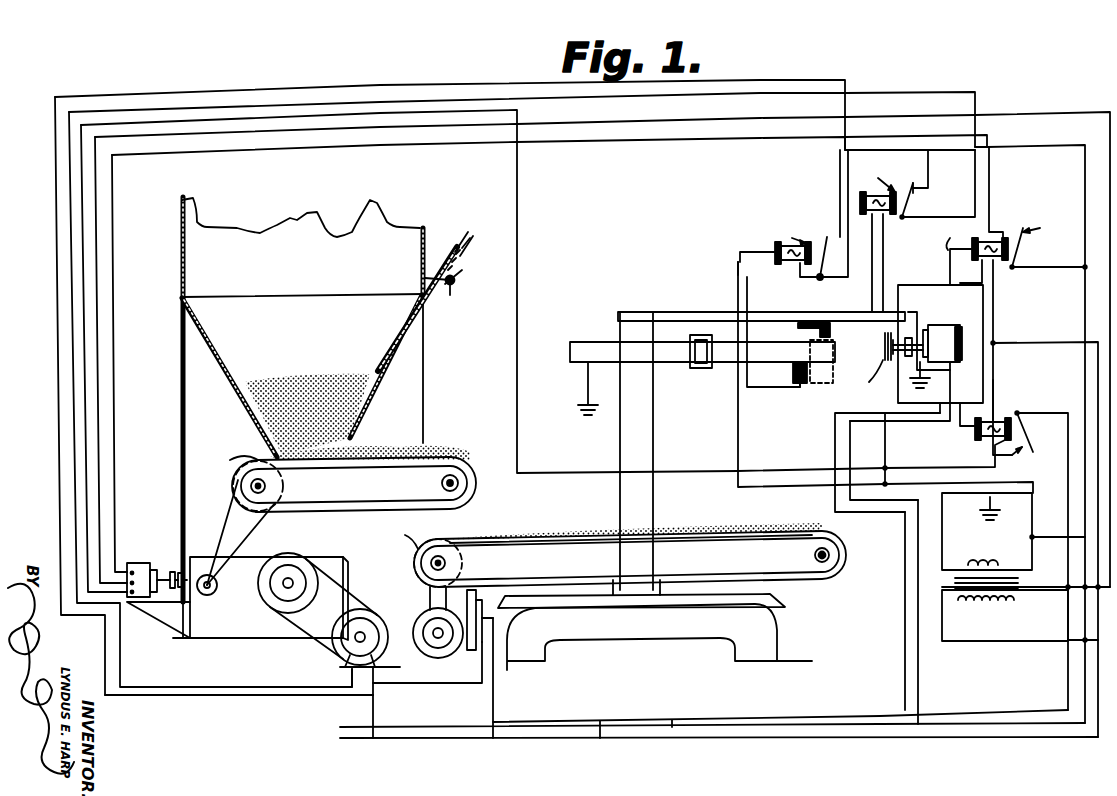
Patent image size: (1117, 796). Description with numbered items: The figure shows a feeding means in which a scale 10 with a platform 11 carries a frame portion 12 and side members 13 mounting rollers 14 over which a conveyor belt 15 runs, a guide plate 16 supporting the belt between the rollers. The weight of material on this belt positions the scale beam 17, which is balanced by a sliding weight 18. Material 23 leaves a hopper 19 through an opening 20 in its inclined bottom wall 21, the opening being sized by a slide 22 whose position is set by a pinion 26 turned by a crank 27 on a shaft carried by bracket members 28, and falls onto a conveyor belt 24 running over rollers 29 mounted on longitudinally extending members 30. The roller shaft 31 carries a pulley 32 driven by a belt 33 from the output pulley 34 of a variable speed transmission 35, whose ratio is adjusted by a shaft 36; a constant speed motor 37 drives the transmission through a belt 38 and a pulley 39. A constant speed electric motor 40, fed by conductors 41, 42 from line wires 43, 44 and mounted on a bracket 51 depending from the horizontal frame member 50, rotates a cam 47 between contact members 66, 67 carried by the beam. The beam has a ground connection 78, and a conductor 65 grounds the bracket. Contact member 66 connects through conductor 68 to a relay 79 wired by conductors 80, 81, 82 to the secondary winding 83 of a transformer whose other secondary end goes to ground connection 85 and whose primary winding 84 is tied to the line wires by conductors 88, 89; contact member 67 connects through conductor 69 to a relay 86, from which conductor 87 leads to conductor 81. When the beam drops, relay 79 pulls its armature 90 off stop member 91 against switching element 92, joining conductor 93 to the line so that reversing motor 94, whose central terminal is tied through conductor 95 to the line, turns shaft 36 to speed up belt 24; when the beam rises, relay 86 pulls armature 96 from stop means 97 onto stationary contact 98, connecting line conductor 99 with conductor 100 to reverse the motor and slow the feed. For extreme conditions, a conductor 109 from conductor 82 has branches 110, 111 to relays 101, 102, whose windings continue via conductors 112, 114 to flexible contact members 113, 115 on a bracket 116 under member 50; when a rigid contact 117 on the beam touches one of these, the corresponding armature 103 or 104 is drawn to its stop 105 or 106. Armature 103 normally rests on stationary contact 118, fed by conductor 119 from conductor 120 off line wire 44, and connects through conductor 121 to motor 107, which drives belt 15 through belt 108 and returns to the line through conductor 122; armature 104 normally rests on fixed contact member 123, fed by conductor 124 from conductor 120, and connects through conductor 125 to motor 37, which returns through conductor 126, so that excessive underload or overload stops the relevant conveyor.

The scale 10 is at (620, 498).
The platform 11 is at (776, 604).
The frame portion 12 is at (632, 596).
The side members 13 is at (705, 547).
The rollers 14 is at (420, 542).
The conveyor belt 15 is at (422, 344).
The guide plate 16 is at (578, 548).
The scale beam 17 is at (672, 362).
The sliding weight 18 is at (706, 368).
The hopper 19 is at (406, 242).
The opening 20 is at (365, 363).
The inclined bottom wall 21 is at (400, 320).
The slide 22 is at (380, 396).
The material 23 is at (262, 403).
The conveyor belt 24 is at (235, 462).
The pinion 26 is at (466, 268).
The crank 27 is at (454, 279).
The bracket members 28 is at (457, 248).
The rollers 29 is at (232, 484).
The longitudinally extending members 30 is at (347, 504).
The shaft 31 is at (266, 486).
The pulley 32 is at (221, 499).
The belt 33 is at (209, 554).
The pulley 34 is at (210, 595).
The variable speed transmission 35 is at (265, 569).
The shaft 36 is at (174, 576).
The constant speed motor 37 is at (328, 654).
The belt 38 is at (272, 633).
The pulley 39 is at (265, 618).
The constant speed electric motor 40 is at (941, 326).
The conductor 41 is at (904, 653).
The conductor 42 is at (918, 681).
The line wire 43 is at (670, 720).
The line wire 44 is at (1036, 270).
The cam 47 is at (883, 358).
The horizontal frame member 50 is at (702, 310).
The bracket 51 is at (903, 312).
The conductor 65 is at (950, 371).
The contact member 66 is at (912, 338).
The contact member 67 is at (870, 382).
The conductor 68 is at (920, 286).
The conductor 69 is at (960, 422).
The ground connection 78 is at (588, 400).
The relay 79 is at (947, 238).
The conductor 80 is at (993, 322).
The conductor 81 is at (1060, 338).
The conductor 82 is at (1012, 551).
The secondary winding 83 is at (978, 560).
The primary winding 84 is at (983, 606).
The ground connection 85 is at (990, 508).
The relay 86 is at (978, 449).
The conductor 87 is at (994, 376).
The conductor 88 is at (1023, 594).
The conductor 89 is at (1031, 642).
The armature 90 is at (1020, 239).
The stop member 91 is at (1042, 216).
The switching element 92 is at (1000, 236).
The conductor 93 is at (124, 326).
The reversing motor 94 is at (140, 564).
The conductor 95 is at (1044, 110).
The armature 96 is at (1024, 430).
The stop means 97 is at (1033, 452).
The stationary contact 98 is at (1015, 460).
The line conductor 99 is at (779, 720).
The conductor 100 is at (442, 132).
The relay 101 is at (775, 252).
The relay 102 is at (864, 192).
The armature 103 is at (822, 280).
The armature 104 is at (918, 205).
The stop 105 is at (786, 226).
The stop 106 is at (895, 176).
The motor 107 is at (458, 656).
The belt 108 is at (430, 606).
The conductor 109 is at (1032, 510).
The branch conductor 110 is at (738, 264).
The branch conductor 111 is at (835, 440).
The conductor 112 is at (748, 301).
The flexible contact member 113 is at (814, 384).
The conductor 114 is at (883, 254).
The flexible contact member 115 is at (826, 322).
The bracket 116 is at (793, 386).
The rigid contact 117 is at (836, 366).
The stationary contact 118 is at (827, 237).
The conductor 119 is at (839, 188).
The conductor 120 is at (1055, 128).
The conductor 121 is at (845, 80).
The conductor 122 is at (494, 704).
The fixed contact member 123 is at (926, 184).
The conductor 124 is at (930, 171).
The conductor 125 is at (392, 134).
The conductor 126 is at (370, 696).